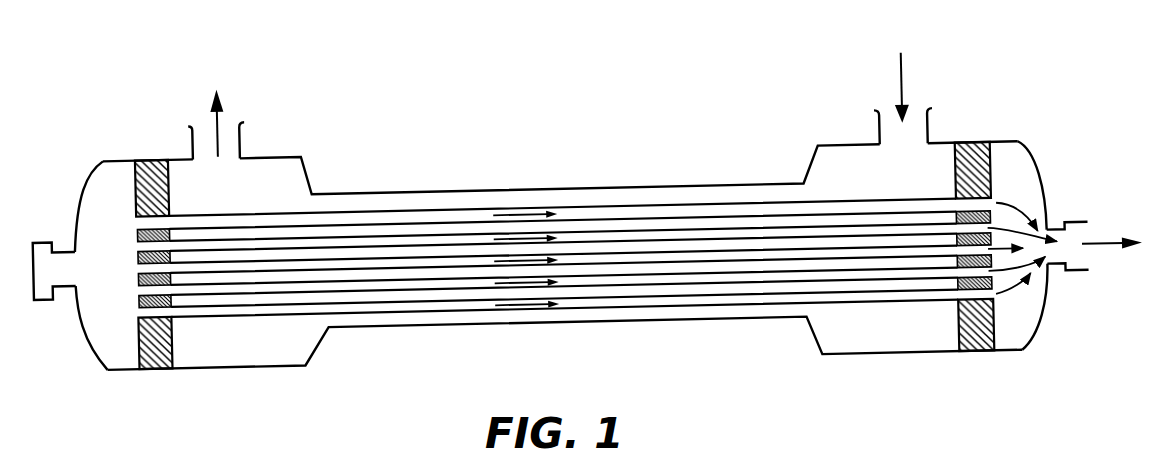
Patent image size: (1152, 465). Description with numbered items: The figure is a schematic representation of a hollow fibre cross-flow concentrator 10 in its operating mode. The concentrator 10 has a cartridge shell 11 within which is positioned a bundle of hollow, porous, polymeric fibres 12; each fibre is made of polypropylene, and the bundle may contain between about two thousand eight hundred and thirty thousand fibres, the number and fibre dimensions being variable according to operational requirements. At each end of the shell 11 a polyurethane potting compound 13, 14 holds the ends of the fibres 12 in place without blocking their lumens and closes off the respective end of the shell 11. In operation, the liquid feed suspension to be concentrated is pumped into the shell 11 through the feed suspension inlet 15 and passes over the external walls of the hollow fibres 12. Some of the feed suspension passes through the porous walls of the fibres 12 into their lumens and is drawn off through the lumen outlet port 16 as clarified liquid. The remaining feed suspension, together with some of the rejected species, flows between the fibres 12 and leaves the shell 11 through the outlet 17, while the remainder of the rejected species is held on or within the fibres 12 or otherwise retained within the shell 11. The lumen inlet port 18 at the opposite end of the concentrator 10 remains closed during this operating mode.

The hollow fibre cross-flow concentrator 10 is at (588, 231).
The cartridge shell 11 is at (625, 182).
The hollow, porous, polymeric fibres 12 is at (432, 278).
The polyurethane potting compound 13 is at (150, 165).
The polyurethane potting compound 14 is at (973, 140).
The feed suspension inlet 15 is at (937, 123).
The lumen outlet port 16 is at (1060, 270).
The outlet 17 is at (245, 150).
The lumen inlet port 18 is at (65, 249).